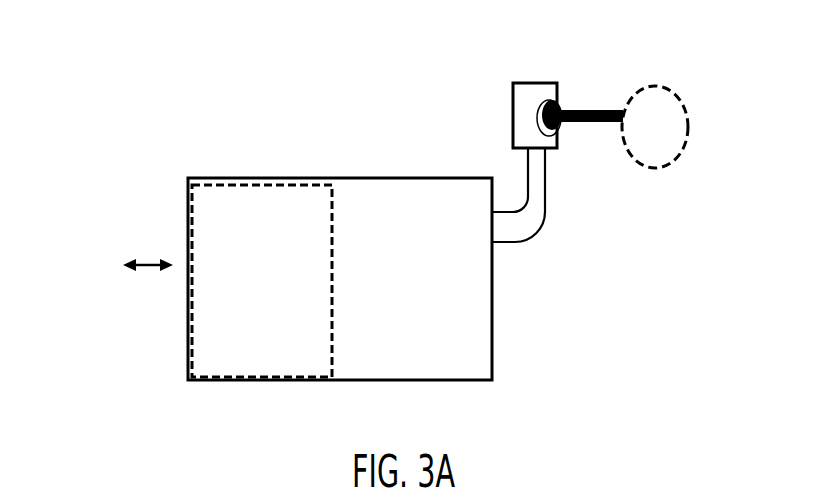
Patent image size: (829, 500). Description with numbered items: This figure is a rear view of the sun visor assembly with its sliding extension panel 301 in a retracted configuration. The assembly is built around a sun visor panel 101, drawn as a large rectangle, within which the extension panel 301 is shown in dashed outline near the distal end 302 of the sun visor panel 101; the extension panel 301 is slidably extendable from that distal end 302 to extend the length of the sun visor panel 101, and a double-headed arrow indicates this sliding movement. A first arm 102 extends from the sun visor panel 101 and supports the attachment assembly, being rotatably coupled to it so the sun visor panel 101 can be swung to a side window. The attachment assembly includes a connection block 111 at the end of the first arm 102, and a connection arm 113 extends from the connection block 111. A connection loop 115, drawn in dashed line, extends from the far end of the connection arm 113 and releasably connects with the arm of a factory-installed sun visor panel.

The sun visor panel 101 is at (390, 242).
The sliding extension panel 301 is at (217, 242).
The distal end 302 is at (185, 227).
The first arm 102 is at (536, 226).
The connection block 111 is at (513, 107).
The connection arm 113 is at (604, 152).
The connection loop 115 is at (685, 113).